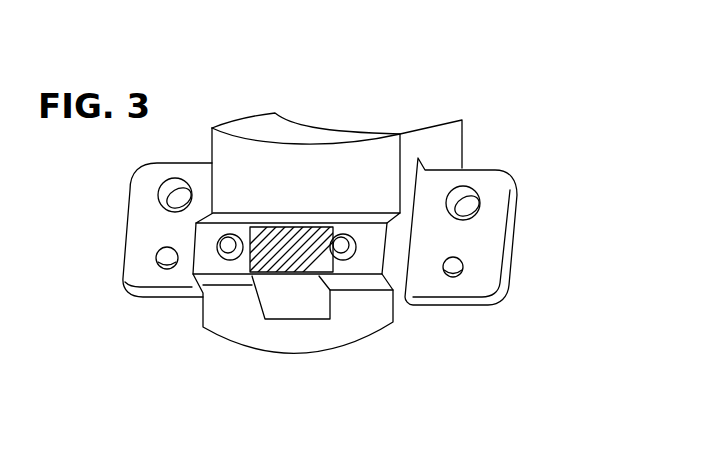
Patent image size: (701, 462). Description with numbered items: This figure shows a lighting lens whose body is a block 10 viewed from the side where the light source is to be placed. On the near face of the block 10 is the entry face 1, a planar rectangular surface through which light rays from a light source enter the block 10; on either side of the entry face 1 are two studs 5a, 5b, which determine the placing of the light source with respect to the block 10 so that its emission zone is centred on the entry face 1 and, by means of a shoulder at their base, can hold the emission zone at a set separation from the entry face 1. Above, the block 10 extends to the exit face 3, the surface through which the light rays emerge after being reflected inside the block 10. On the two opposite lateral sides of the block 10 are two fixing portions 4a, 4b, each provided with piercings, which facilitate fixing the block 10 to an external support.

The block 10 is at (530, 85).
The exit face for the light 3 is at (303, 118).
The entry face for the light 1 is at (276, 232).
The stud 5a is at (222, 256).
The stud 5b is at (339, 259).
The portion for fixing the lighting lens 4a is at (140, 225).
The portion for fixing the lighting lens 4b is at (478, 237).